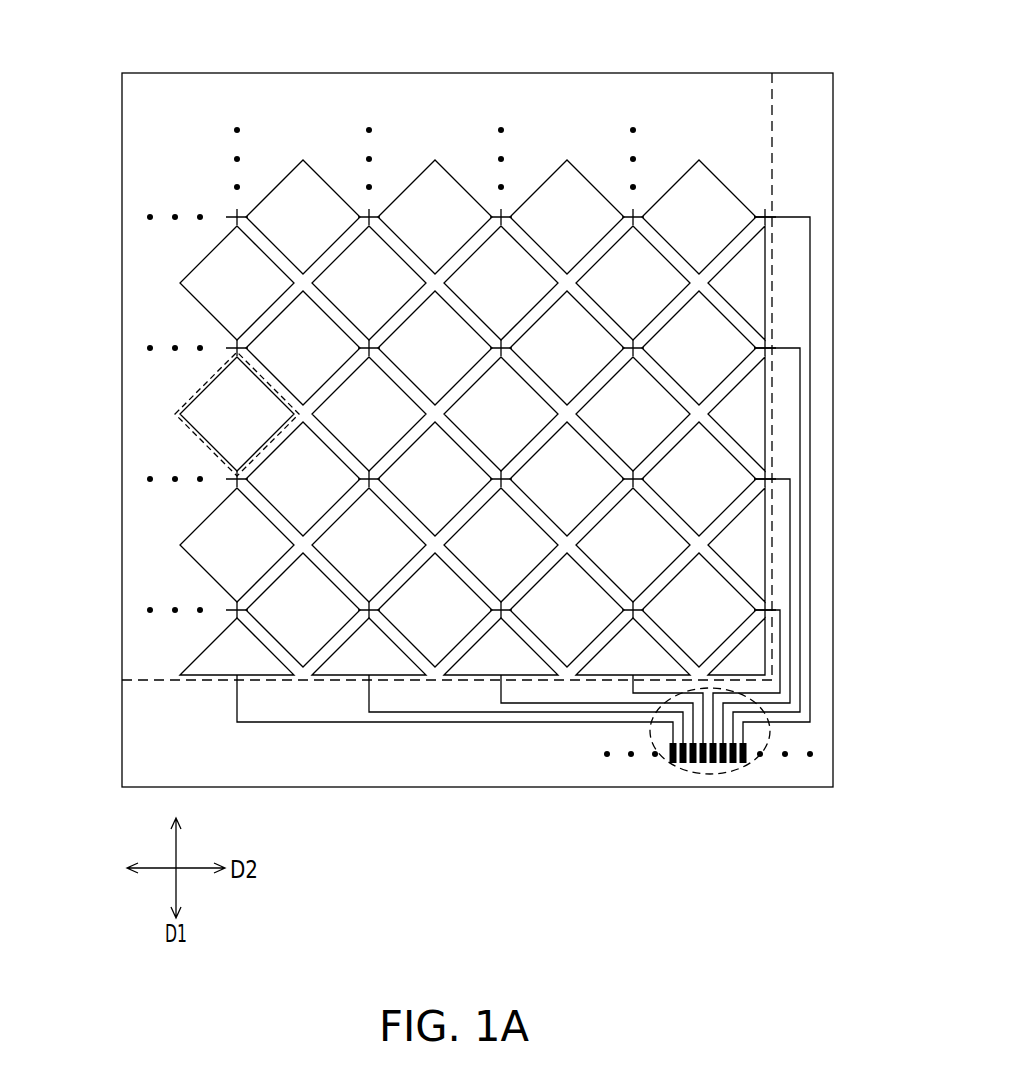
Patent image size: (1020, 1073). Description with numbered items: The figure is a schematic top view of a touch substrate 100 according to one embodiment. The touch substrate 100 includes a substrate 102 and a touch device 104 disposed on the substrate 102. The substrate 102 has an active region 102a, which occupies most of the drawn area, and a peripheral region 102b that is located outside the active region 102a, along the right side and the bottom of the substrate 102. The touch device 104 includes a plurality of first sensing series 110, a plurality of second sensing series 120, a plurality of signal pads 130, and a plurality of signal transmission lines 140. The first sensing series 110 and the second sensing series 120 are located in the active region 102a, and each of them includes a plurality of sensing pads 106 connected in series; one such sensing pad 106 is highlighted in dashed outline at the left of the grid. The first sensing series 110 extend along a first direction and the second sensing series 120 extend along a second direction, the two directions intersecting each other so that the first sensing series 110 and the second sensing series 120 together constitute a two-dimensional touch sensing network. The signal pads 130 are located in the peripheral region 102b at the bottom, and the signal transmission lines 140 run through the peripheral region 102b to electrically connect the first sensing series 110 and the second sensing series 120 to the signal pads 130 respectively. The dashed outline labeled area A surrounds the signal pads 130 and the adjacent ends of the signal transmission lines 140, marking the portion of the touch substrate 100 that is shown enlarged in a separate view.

The touch substrate 100 is at (480, 490).
The substrate 102 is at (615, 787).
The active region 102a is at (770, 56).
The peripheral region 102b is at (833, 56).
The touch device 104 is at (544, 737).
The sensing pad 106 is at (192, 392).
The first sensing series 110 is at (519, 240).
The second sensing series 120 is at (229, 214).
The signal pad 130 is at (736, 764).
The signal transmission line 140 is at (808, 700).
The area A is at (692, 774).